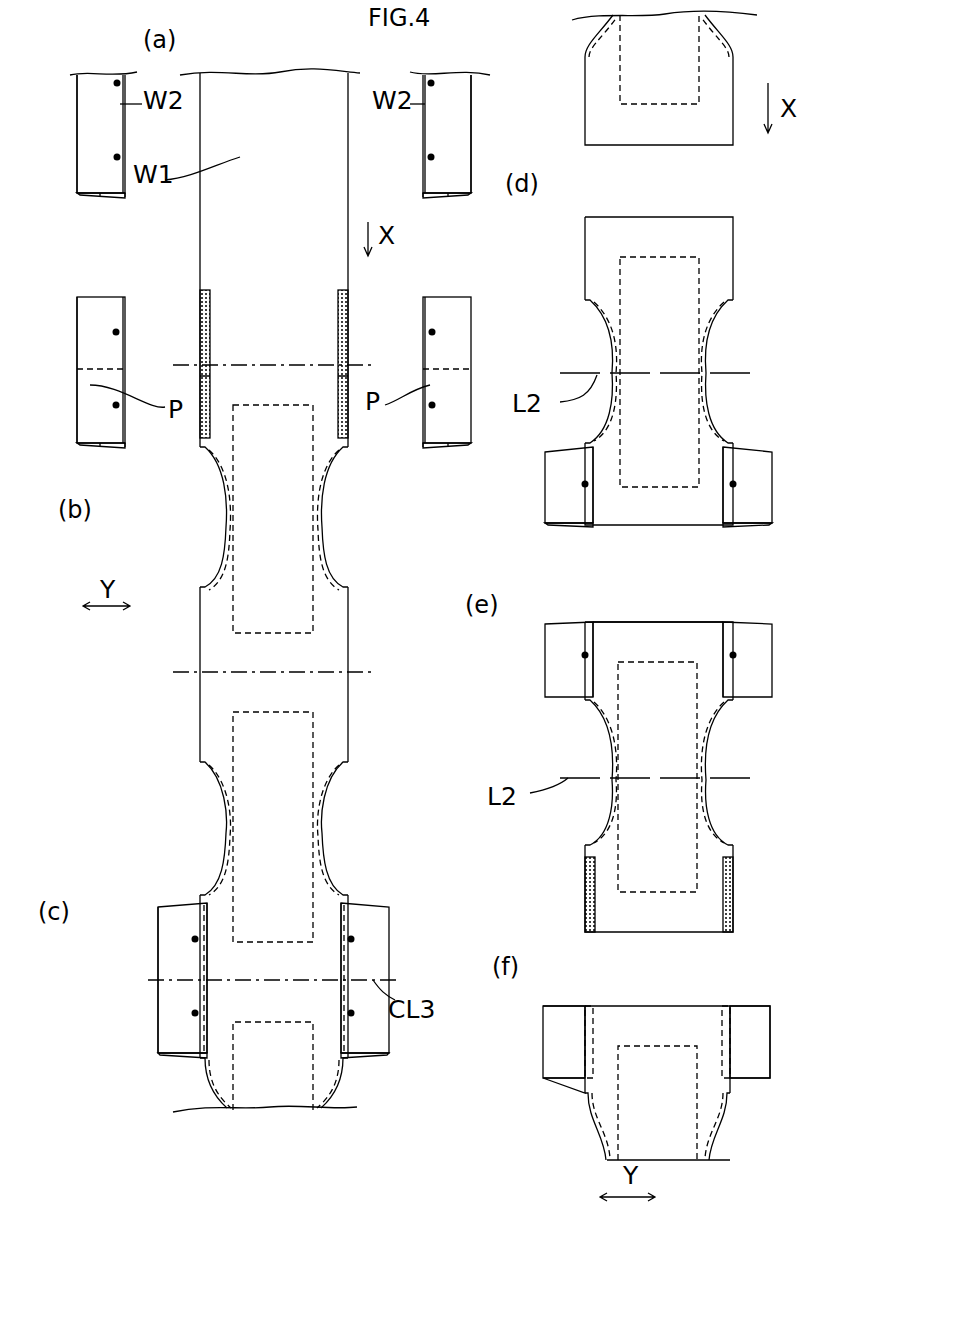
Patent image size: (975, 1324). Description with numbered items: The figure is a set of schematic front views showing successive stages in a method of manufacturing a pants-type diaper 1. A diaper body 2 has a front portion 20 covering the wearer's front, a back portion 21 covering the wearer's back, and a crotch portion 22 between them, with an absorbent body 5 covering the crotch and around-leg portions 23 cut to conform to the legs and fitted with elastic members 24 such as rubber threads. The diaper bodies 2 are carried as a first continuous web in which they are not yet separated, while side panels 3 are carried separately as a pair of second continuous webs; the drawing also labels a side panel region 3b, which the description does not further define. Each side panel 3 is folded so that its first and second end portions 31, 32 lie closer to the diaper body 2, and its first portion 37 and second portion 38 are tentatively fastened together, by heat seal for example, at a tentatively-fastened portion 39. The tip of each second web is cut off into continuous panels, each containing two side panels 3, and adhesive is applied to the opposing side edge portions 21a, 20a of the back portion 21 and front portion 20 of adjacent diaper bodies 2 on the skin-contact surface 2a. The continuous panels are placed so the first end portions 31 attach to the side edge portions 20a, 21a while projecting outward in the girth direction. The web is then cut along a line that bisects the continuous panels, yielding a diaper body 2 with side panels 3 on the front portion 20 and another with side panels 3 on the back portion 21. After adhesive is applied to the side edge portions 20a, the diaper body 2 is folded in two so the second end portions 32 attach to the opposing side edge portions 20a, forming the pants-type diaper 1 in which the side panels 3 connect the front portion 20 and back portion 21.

The pants-type diaper 1 is at (494, 1168).
The diaper body 2 is at (372, 630).
The skin-contact surface 2a is at (322, 195).
The side panel 3 is at (117, 153).
The tape portion 3b is at (105, 126).
The absorbent body 5 is at (270, 492).
The front portion 20 is at (338, 339).
The side edge portion 20a is at (200, 348).
The back portion 21 is at (277, 390).
The side edge portion 21a is at (200, 380).
The crotch portion 22 is at (283, 514).
The around-leg portion 23 is at (220, 530).
The elastic member 24 is at (215, 565).
The first end portion 31 is at (120, 200).
The second end portion 32 is at (125, 197).
The first portion 37 is at (100, 200).
The second portion 38 is at (80, 197).
The tentatively-fastened portion 39 is at (116, 332).